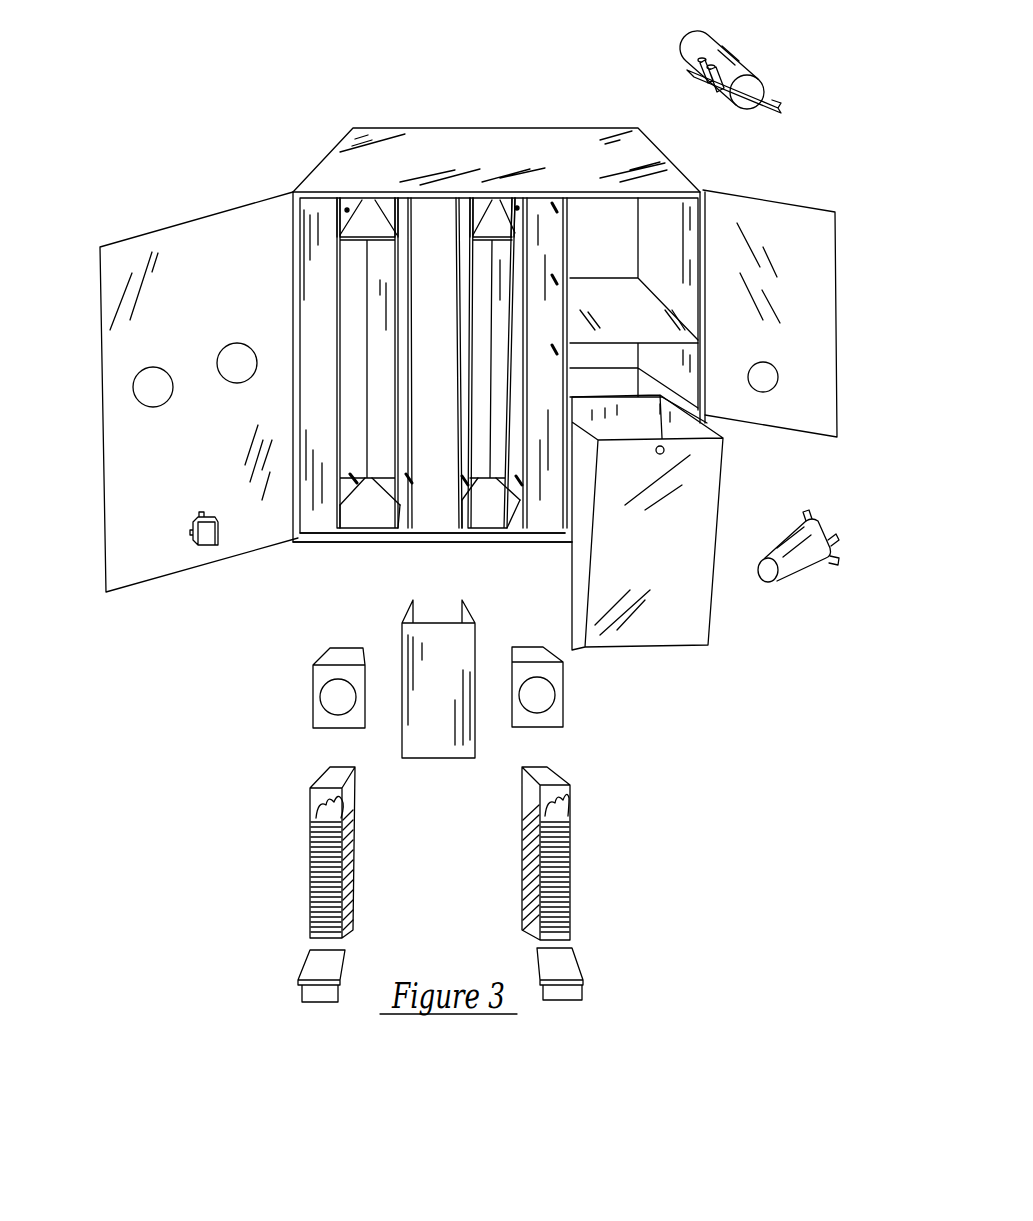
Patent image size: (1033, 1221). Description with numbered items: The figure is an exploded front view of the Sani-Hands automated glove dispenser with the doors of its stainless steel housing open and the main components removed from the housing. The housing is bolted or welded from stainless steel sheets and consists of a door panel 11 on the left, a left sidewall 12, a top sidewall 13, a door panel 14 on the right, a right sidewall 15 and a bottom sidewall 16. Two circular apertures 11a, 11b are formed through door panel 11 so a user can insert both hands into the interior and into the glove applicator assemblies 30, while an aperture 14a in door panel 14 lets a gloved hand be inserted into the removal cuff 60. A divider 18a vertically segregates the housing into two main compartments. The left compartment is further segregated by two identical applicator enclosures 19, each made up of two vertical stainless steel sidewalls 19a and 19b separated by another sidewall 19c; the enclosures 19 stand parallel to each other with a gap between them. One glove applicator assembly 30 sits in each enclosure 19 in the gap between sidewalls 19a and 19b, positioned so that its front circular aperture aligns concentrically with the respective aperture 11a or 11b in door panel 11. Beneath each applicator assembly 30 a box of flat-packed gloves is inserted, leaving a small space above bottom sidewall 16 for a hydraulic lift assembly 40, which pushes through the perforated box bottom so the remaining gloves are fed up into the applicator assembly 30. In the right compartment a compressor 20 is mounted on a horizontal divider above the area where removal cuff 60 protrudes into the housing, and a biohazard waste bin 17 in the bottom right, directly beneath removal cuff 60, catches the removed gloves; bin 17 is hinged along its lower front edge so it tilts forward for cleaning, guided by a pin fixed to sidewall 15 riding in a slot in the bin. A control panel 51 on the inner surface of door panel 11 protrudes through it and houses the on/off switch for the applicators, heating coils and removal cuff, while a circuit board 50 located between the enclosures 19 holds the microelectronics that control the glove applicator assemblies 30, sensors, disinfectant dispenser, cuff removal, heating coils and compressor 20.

The door panel 11 is at (182, 223).
The circular aperture 11a is at (148, 408).
The circular aperture 11b is at (218, 357).
The left sidewall 12 is at (320, 163).
The top sidewall 13 is at (433, 155).
The door panel 14 is at (835, 245).
The aperture 14a is at (778, 372).
The right sidewall 15 is at (670, 177).
The bottom sidewall 16 is at (318, 545).
The biohazard waste bin 17 is at (722, 481).
The divider 18a is at (578, 202).
The applicator enclosure 19 is at (468, 495).
The vertical sidewall 19a is at (343, 510).
The vertical sidewall 19b is at (403, 202).
The sidewall 19c is at (350, 212).
The compressor 20 is at (758, 75).
The glove applicator assembly 30 is at (313, 694).
The hydraulic lift assembly 40 is at (302, 993).
The circuit board 50 is at (430, 758).
The control panel 51 is at (210, 548).
The removal cuff 60 is at (803, 572).